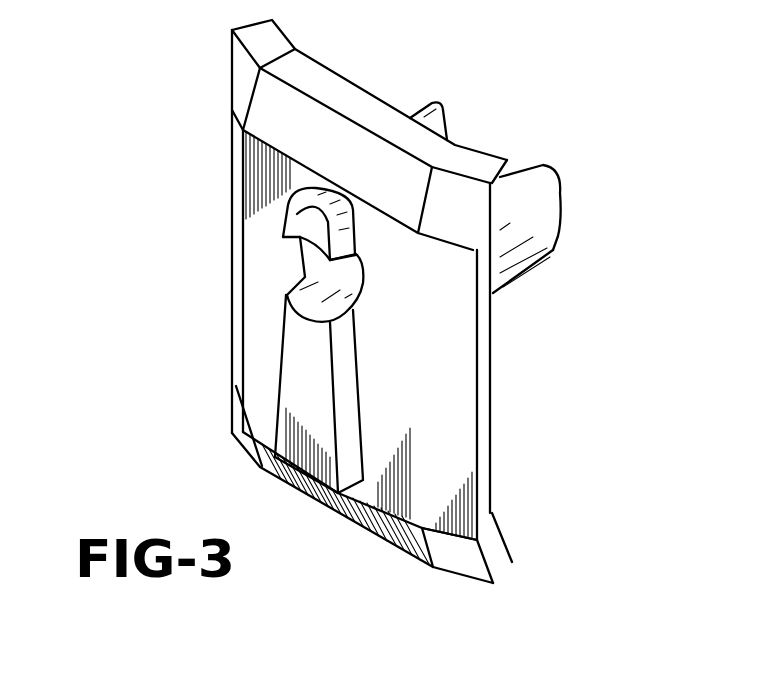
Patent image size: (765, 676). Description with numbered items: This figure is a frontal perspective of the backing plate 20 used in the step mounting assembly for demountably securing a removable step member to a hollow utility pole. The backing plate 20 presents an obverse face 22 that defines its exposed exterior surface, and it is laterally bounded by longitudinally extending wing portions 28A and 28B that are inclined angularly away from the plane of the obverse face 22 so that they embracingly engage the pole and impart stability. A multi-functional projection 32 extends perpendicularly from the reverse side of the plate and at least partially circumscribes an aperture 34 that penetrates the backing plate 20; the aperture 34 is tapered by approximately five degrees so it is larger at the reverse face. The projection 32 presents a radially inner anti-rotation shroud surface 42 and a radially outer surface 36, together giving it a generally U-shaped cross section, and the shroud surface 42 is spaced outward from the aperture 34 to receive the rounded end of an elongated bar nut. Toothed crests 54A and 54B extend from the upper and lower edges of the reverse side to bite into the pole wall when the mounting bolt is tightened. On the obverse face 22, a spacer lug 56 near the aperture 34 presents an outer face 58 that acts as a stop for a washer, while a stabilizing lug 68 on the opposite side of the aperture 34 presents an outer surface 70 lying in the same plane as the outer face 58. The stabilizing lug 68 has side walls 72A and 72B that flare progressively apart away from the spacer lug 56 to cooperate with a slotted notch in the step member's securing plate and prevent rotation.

The backing plate 20 is at (357, 542).
The obverse face 22 is at (393, 310).
The wing portion 28A is at (237, 140).
The wing portion 28B is at (450, 430).
The multi-functional projection 32 is at (571, 195).
The aperture 34 is at (290, 257).
The radially outer surface 36 is at (553, 247).
The anti-rotation shroud surface 42 is at (437, 125).
The toothed crest 54A is at (507, 160).
The toothed crest 54B is at (493, 583).
The spacer lug 56 is at (312, 198).
The outer face 58 is at (298, 215).
The stabilizing lug 68 is at (285, 413).
The outer surface 70 is at (297, 370).
The side wall 72A is at (277, 345).
The side wall 72B is at (347, 433).